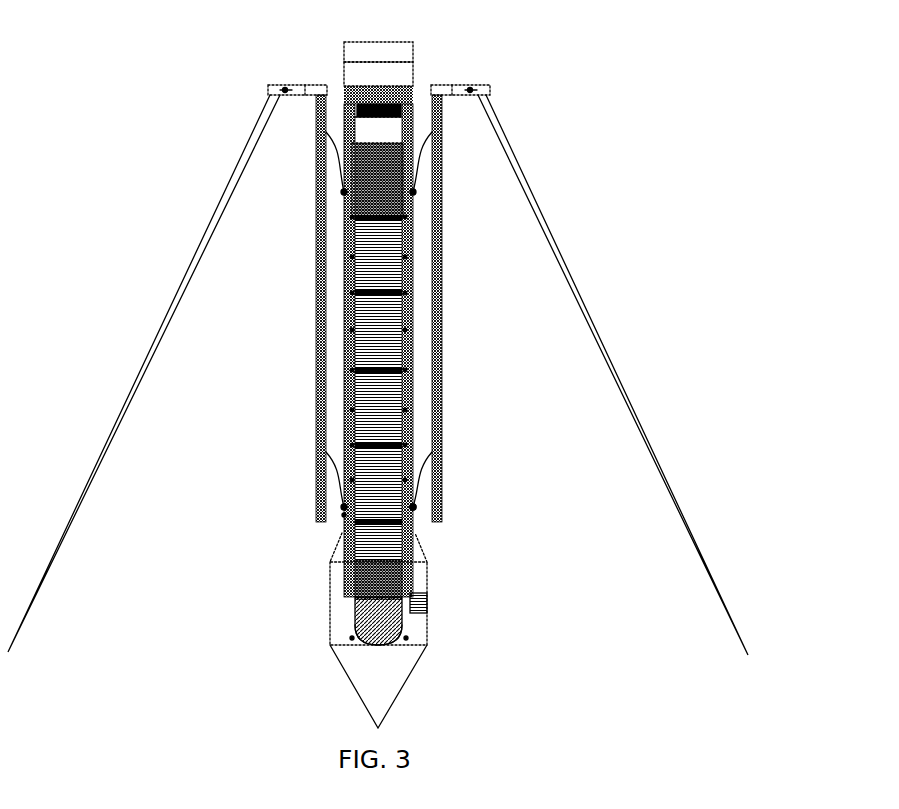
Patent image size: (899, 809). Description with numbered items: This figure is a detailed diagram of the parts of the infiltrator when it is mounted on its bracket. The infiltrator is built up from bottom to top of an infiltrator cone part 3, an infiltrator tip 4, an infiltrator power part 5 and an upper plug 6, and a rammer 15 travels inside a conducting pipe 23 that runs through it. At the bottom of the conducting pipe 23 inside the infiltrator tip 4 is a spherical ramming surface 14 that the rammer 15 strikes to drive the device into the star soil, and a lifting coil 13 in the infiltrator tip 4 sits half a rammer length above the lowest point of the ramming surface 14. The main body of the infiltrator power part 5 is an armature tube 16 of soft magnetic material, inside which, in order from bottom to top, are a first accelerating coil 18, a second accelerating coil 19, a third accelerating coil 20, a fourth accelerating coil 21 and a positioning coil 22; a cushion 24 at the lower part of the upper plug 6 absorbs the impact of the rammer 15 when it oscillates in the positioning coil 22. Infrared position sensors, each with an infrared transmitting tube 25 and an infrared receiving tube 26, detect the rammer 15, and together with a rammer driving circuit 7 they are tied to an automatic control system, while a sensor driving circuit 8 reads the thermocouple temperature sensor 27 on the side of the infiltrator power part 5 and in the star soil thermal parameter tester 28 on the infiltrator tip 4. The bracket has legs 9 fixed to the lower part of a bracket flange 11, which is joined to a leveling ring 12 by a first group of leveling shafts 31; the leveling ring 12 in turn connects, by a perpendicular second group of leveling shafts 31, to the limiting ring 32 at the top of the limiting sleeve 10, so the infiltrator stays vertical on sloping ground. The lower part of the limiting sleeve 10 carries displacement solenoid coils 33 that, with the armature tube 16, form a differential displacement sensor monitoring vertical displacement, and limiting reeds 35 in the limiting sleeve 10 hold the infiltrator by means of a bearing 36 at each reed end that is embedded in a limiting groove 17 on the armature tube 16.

The infiltrator cone part 3 is at (364, 668).
The infiltrator tip 4 is at (332, 557).
The infiltrator power part 5 is at (330, 352).
The upper plug 6 is at (413, 97).
The rammer driving circuit 7 is at (414, 86).
The sensor driving circuit 8 is at (346, 58).
The legs 9 is at (579, 298).
The limiting sleeve 10 is at (443, 330).
The bracket flange 11 is at (278, 93).
The leveling ring 12 is at (300, 88).
The lifting coil 13 is at (345, 535).
The ramming surface 14 is at (380, 648).
The rammer 15 is at (355, 630).
The armature tube 16 is at (352, 257).
The limiting groove 17 is at (344, 192).
The first accelerating coil 18 is at (345, 473).
The second accelerating coil 19 is at (348, 388).
The third accelerating coil 20 is at (350, 318).
The fourth accelerating coil 21 is at (352, 216).
The positioning coil 22 is at (343, 178).
The conducting pipe 23 is at (350, 145).
The cushion 24 is at (416, 96).
The infrared transmitting tube 25 is at (405, 258).
The infrared receiving tube 26 is at (346, 228).
The thermocouple temperature sensor 27 is at (412, 365).
The star soil thermal parameter tester 28 is at (432, 608).
The leveling shafts 31 is at (276, 90).
The limiting ring 32 is at (322, 86).
The displacement solenoid coils 33 is at (440, 143).
The limiting reeds 35 is at (438, 480).
The bearing 36 is at (414, 509).